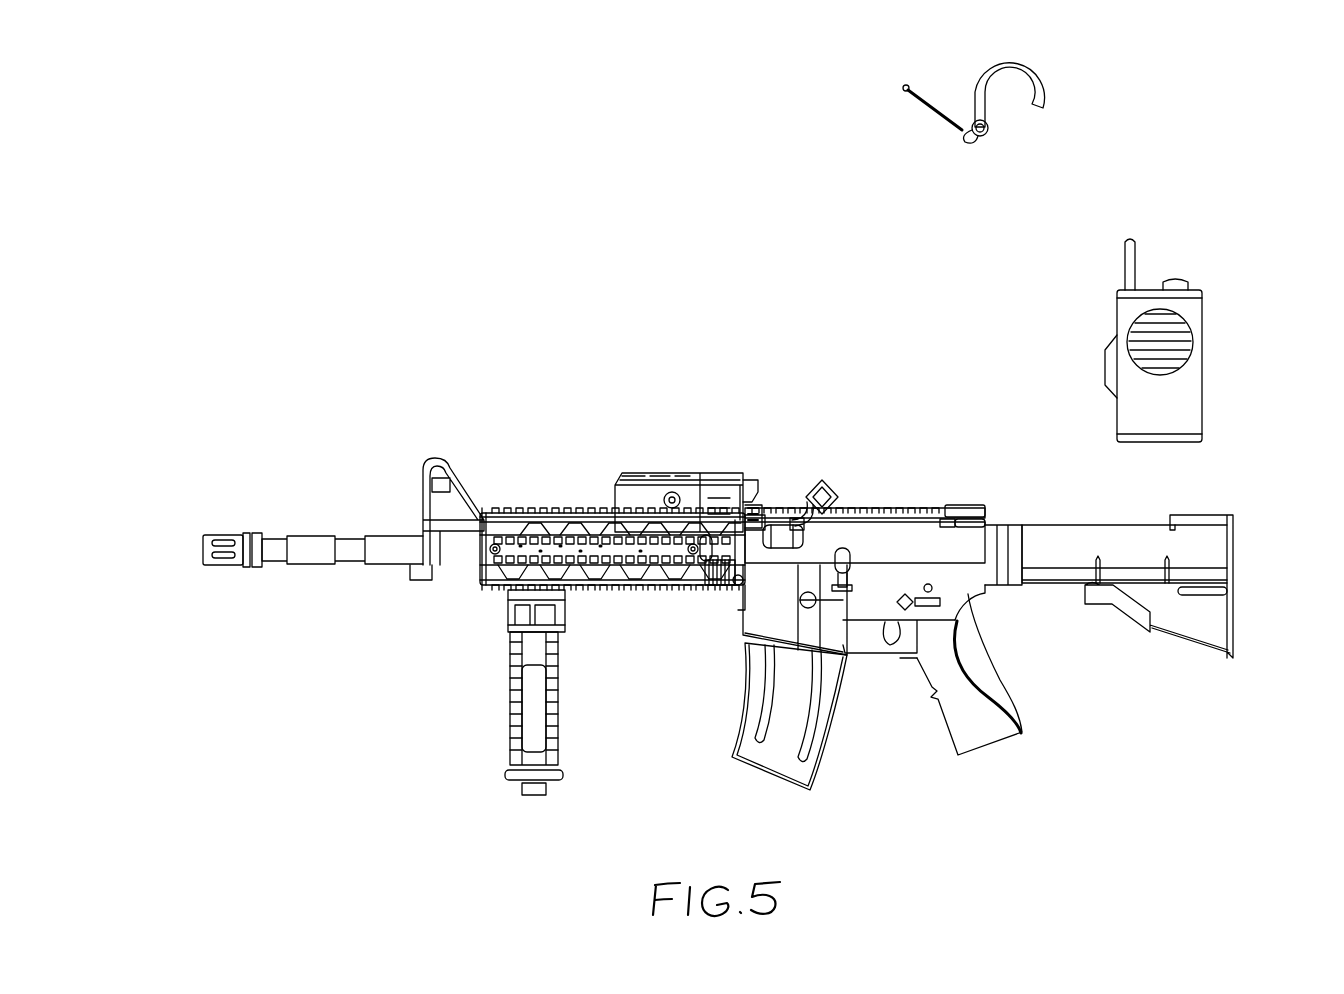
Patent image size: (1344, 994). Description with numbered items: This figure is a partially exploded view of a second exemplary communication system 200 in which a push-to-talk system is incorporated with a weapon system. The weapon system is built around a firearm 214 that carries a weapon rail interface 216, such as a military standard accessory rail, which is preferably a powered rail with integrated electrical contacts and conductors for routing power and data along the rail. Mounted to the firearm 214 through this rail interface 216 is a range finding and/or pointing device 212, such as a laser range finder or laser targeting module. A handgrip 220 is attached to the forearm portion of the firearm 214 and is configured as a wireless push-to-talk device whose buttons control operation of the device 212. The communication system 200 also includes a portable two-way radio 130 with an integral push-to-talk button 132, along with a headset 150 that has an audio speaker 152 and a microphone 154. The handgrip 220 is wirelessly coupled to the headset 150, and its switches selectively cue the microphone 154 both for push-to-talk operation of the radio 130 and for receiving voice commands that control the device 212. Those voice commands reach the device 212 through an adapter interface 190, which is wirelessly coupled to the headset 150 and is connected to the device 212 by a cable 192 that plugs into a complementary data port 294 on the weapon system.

The communication system 200 is at (600, 225).
The two-way radio 130 is at (1202, 405).
The push-to-talk button 132 is at (1110, 357).
The headset 150 is at (1052, 108).
The audio speaker 152 is at (988, 138).
The microphone 154 is at (905, 92).
The adapter interface 190 is at (832, 484).
The cable 192 is at (800, 512).
The range finding and/or pointing device 212 is at (632, 462).
The firearm 214 is at (958, 508).
The weapon rail interface 216 is at (547, 507).
The handgrip 220 is at (495, 755).
The data port 294 is at (748, 513).